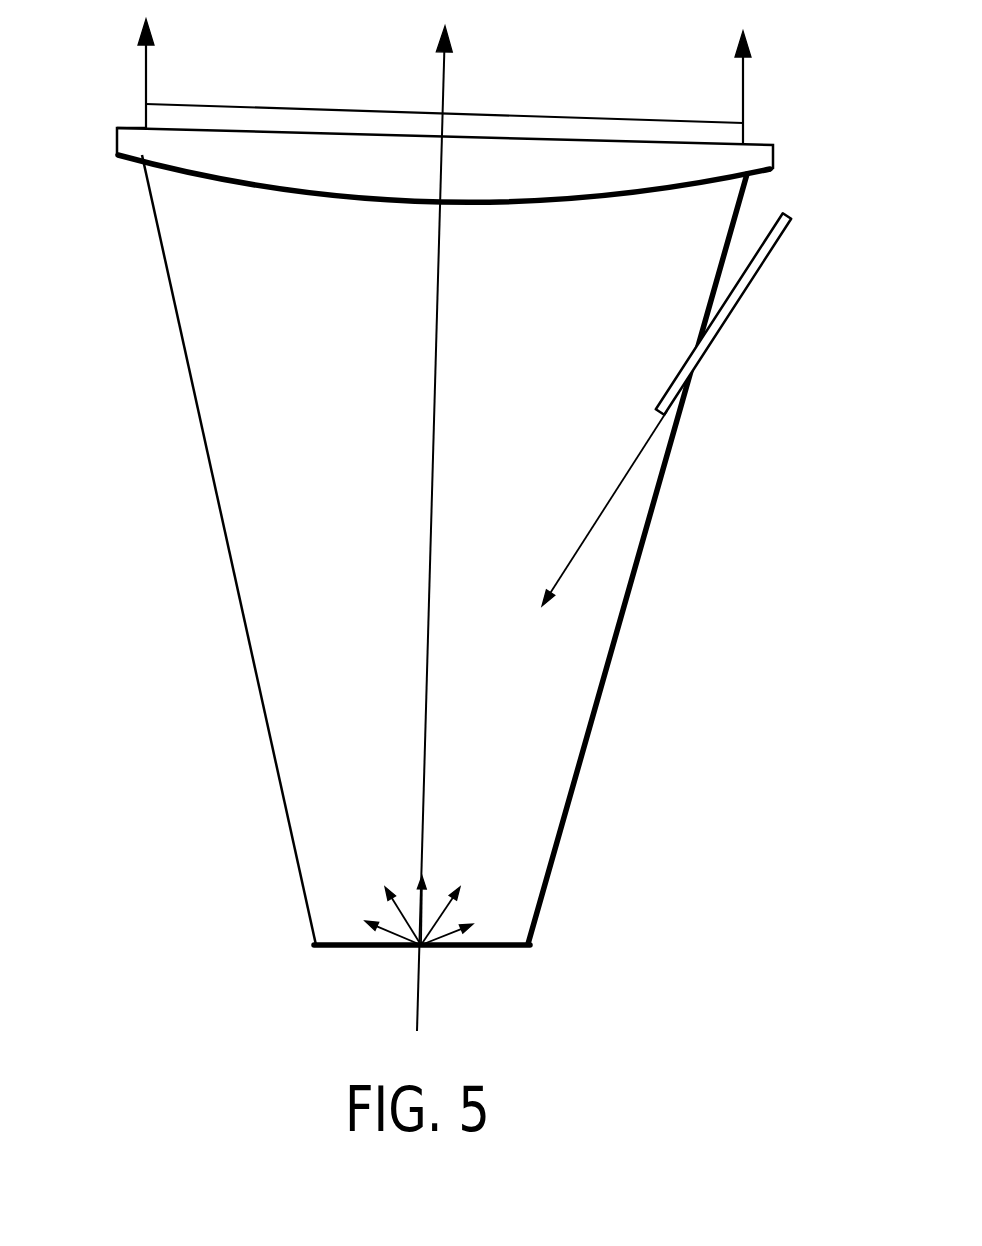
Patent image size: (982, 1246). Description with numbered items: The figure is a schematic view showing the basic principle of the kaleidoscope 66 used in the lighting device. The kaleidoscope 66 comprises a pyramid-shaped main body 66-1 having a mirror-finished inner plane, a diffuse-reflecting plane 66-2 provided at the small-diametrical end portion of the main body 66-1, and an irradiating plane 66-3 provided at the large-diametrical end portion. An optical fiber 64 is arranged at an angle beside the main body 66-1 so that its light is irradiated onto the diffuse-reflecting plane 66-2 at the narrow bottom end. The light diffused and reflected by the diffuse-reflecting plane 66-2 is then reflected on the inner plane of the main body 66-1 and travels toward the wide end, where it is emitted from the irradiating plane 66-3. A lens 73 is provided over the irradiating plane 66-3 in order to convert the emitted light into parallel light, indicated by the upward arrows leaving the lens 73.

The lens 73 is at (120, 145).
The kaleidoscope 66 is at (421, 525).
The pyramid-shaped main body 66-1 is at (236, 582).
The diffuse-reflecting plane 66-2 is at (470, 945).
The irradiating plane 66-3 is at (573, 118).
The optical fiber 64 is at (750, 293).